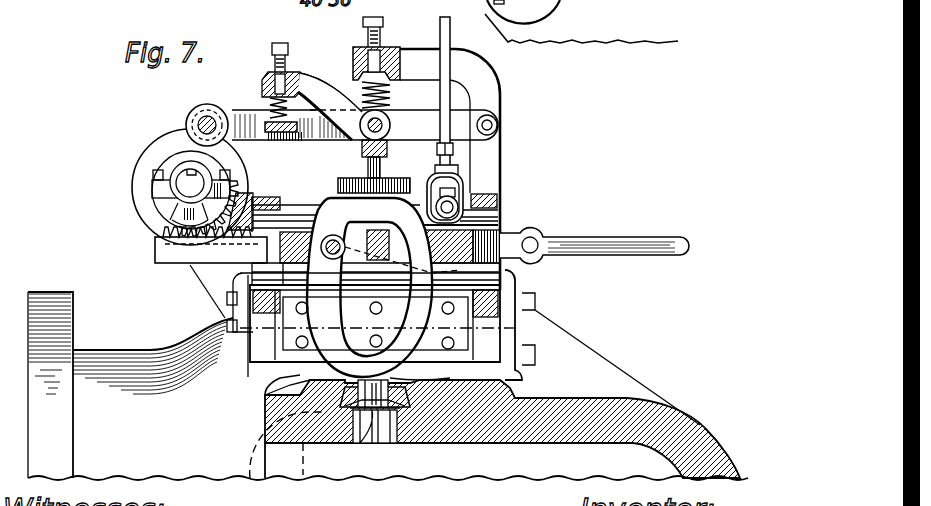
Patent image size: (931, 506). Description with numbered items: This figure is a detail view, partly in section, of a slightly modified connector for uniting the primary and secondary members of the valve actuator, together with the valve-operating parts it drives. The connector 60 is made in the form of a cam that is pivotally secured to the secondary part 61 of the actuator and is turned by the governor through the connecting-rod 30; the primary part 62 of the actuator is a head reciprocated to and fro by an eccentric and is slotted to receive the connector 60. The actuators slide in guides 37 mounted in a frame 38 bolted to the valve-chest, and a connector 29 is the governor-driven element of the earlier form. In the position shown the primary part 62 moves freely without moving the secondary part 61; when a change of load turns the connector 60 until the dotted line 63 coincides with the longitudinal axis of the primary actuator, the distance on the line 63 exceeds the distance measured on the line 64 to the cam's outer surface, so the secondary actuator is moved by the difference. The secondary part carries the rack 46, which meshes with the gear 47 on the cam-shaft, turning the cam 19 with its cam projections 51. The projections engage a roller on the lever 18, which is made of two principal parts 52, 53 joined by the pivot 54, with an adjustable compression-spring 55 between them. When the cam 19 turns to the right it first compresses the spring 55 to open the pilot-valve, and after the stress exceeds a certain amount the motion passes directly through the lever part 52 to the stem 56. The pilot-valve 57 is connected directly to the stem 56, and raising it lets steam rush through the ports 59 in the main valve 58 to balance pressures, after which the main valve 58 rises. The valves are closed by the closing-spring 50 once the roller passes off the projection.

The cam 19 is at (170, 153).
The cam projections 51 is at (140, 173).
The gear 47 is at (172, 218).
The secondary part of the actuator 61 is at (213, 258).
The lever part 53 is at (234, 118).
The adjustable compression-spring 55 is at (265, 120).
The lever part 52 is at (322, 94).
The lever 18 is at (365, 137).
The pivot 54 is at (368, 136).
The stem 56 is at (383, 163).
The closing-spring 50 is at (390, 95).
The connector 29 is at (376, 40).
The connecting-rod 30 is at (452, 34).
The guides 37 is at (328, 21).
The rack 46 is at (266, 6).
The primary part of the actuator 62 is at (509, 236).
The line 64 is at (357, 243).
The dotted line 63 is at (415, 290).
The connector 60 is at (325, 294).
The frame 38 is at (294, 352).
The ports 59 is at (410, 397).
The pilot-valve 57 is at (352, 414).
The main valve 58 is at (384, 440).